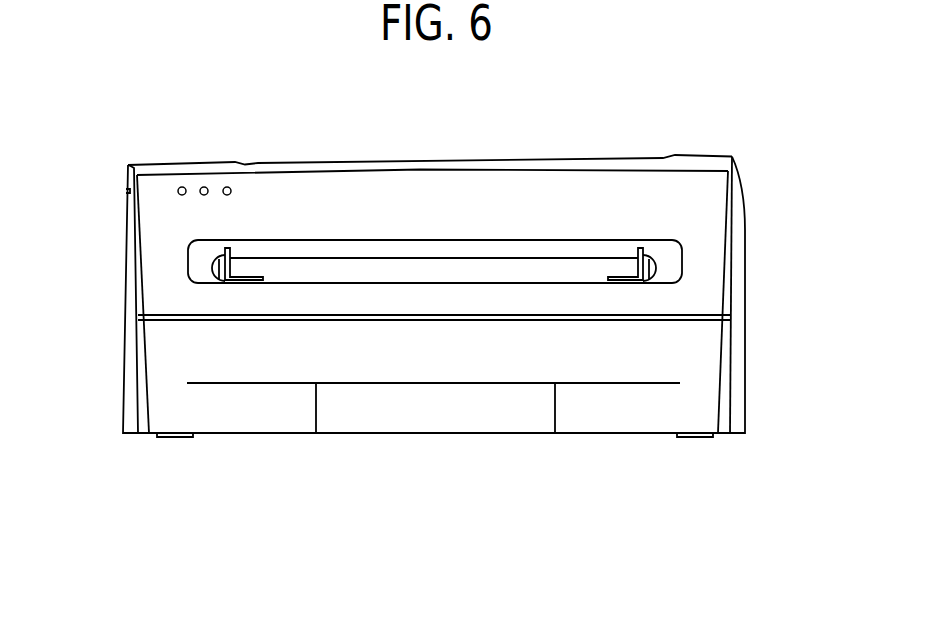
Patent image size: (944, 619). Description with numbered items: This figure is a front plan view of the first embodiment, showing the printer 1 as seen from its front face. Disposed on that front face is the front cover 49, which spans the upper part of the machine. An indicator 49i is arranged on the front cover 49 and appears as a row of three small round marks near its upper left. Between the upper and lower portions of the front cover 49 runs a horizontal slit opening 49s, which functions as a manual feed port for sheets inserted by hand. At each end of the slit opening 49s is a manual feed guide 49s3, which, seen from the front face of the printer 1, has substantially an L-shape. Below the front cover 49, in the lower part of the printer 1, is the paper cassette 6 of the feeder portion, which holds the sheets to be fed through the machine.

The printer 1 is at (225, 149).
The front cover 49 is at (678, 202).
The indicator 49i is at (177, 191).
The slit opening 49s is at (500, 266).
The manual feed guide 49s3 is at (214, 266).
The paper cassette 6 is at (618, 400).